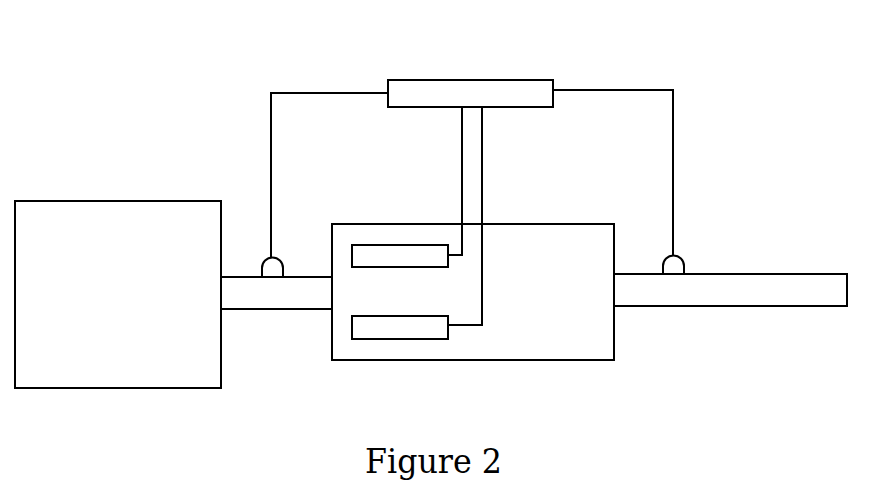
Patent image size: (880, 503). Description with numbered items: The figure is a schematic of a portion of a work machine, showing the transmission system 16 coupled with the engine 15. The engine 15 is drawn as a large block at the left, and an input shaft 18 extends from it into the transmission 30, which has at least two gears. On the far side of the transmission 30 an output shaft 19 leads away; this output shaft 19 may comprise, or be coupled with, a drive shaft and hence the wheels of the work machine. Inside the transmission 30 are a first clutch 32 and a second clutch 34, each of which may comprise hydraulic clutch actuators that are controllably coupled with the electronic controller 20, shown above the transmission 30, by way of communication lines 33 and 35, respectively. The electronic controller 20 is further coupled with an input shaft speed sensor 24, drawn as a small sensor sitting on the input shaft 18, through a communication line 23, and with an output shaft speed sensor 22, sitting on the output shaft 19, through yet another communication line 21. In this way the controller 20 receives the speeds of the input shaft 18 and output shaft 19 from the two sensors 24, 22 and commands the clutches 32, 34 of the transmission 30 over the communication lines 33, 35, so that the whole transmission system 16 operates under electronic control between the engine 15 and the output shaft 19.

The engine 15 is at (78, 212).
The transmission system 16 is at (170, 94).
The input shaft 18 is at (298, 310).
The output shaft 19 is at (722, 298).
The electronic controller 20 is at (493, 90).
The communication line 21 is at (674, 159).
The output shaft speed sensor 22 is at (687, 267).
The input sensor signal line 23 is at (330, 93).
The input shaft speed sensor 24 is at (285, 270).
The transmission 30 is at (573, 359).
The first clutch 32 is at (397, 341).
The communication line 33 is at (484, 297).
The second clutch 34 is at (375, 245).
The communication line 35 is at (462, 170).